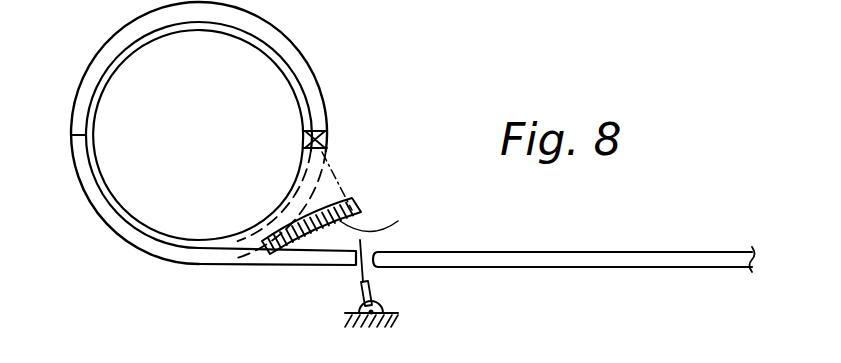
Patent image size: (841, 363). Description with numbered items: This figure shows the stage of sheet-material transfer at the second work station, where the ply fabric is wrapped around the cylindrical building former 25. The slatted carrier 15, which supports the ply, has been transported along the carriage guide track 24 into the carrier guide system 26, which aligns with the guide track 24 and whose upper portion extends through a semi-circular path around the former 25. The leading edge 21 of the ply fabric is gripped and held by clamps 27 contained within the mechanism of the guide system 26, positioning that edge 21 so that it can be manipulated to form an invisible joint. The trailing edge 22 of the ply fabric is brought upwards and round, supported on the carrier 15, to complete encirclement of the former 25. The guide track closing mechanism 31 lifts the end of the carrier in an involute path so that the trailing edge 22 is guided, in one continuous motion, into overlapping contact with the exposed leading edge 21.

The former 25 is at (137, 82).
The carrier guide system 26 is at (118, 223).
The clamps 27 is at (331, 128).
The edge 21 is at (311, 138).
The trailing edge 22 is at (343, 186).
The carriage guide track 24 is at (497, 257).
The guide track closing mechanism 31 is at (364, 292).
The slatted carrier 15 is at (391, 218).